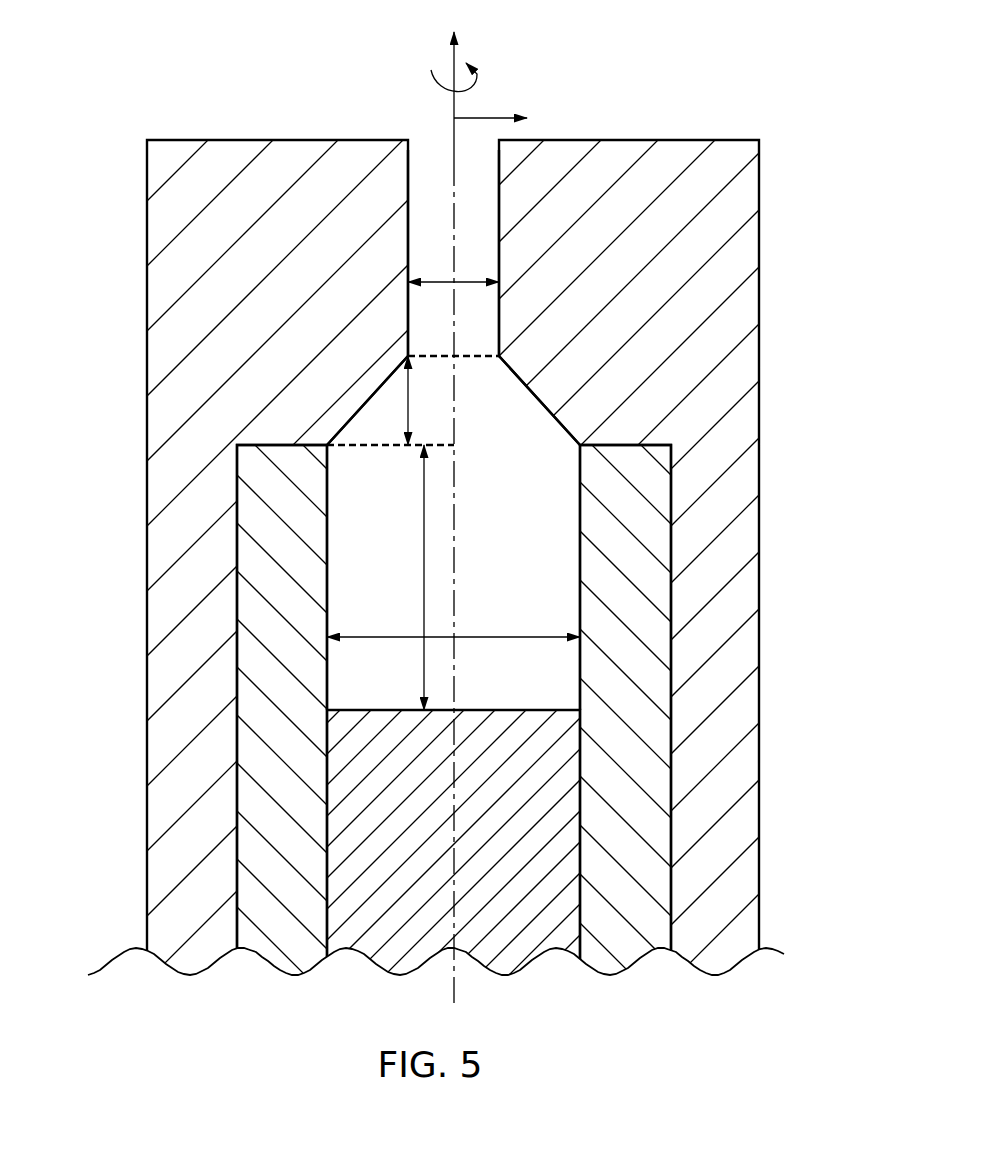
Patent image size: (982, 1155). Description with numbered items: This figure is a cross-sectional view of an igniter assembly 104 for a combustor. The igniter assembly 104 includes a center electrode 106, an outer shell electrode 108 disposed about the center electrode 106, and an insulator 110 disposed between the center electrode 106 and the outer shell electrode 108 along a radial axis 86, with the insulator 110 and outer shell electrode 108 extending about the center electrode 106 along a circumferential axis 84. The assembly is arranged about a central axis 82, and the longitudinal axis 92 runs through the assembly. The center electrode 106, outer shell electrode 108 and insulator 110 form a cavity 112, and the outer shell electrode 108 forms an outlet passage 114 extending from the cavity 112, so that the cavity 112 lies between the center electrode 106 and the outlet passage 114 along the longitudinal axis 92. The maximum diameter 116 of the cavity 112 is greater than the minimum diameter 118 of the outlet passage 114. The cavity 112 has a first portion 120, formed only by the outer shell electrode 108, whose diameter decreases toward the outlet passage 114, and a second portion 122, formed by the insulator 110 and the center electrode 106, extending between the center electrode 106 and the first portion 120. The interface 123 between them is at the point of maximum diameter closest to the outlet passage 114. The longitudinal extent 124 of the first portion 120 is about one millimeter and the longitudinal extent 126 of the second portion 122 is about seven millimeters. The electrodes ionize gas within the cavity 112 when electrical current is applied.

The central axis 82 is at (452, 160).
The circumferential axis 84 is at (431, 70).
The radial axis 86 is at (490, 118).
The longitudinal axis 92 is at (452, 60).
The igniter assembly 104 is at (782, 444).
The center electrode 106 is at (557, 758).
The outer shell electrode 108 is at (745, 587).
The insulator 110 is at (643, 677).
The cavity 112 is at (548, 487).
The outlet passage 114 is at (478, 190).
The maximum diameter of the cavity 116 is at (480, 637).
The minimum diameter of the outlet passage 118 is at (472, 282).
The first portion of the cavity 120 is at (377, 428).
The second portion of the cavity 122 is at (378, 562).
The interface 123 is at (573, 447).
The longitudinal extent of the first portion 124 is at (408, 395).
The longitudinal extent of the second portion 126 is at (423, 515).